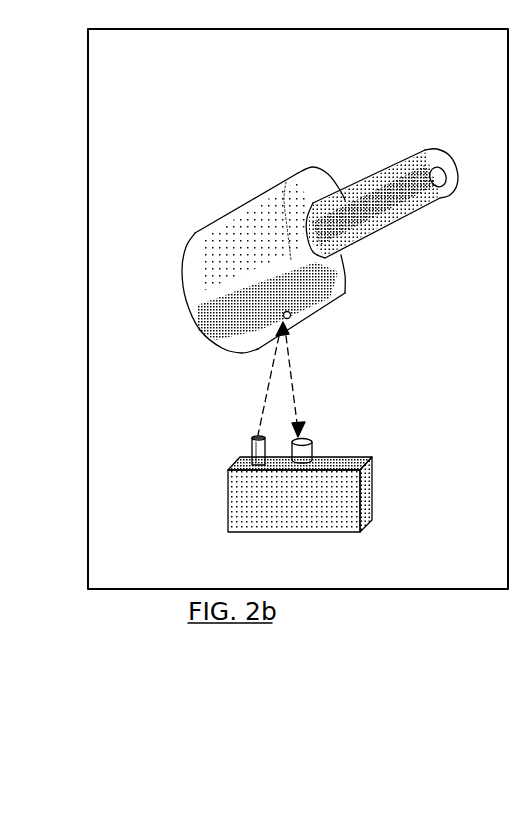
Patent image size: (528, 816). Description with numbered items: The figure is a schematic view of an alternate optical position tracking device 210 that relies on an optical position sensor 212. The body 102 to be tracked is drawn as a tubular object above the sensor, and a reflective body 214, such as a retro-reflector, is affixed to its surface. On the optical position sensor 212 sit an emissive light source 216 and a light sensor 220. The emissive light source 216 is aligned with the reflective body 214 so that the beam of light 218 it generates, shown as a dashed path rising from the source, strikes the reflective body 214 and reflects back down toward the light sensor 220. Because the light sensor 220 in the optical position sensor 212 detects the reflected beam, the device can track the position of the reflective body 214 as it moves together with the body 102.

The body 102 is at (248, 202).
The optical position tracking device 210 is at (75, 431).
The optical position sensor 212 is at (227, 513).
The reflective body 214 is at (291, 319).
The emissive light source 216 is at (253, 437).
The beam of light 218 is at (268, 398).
The light sensor 220 is at (313, 437).